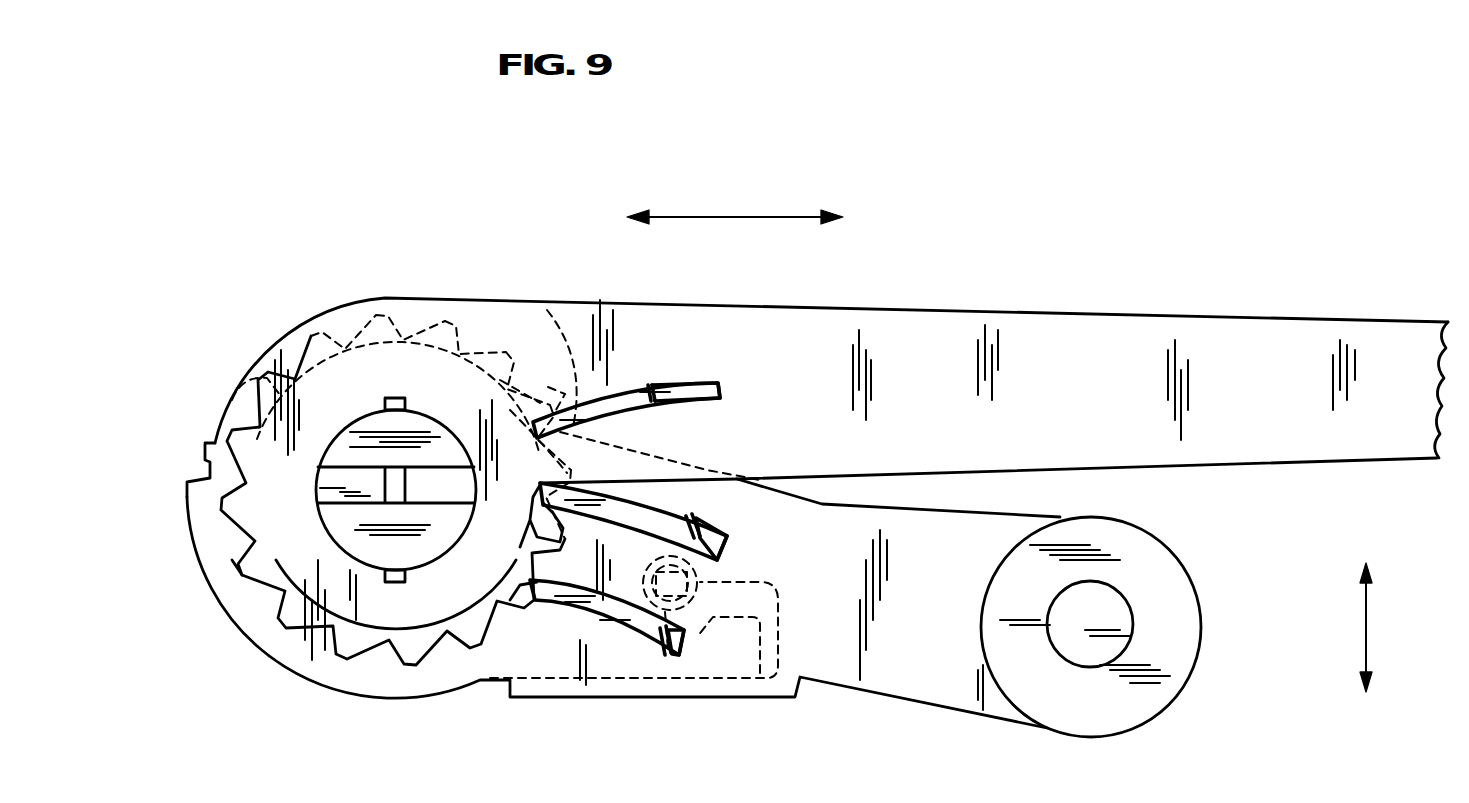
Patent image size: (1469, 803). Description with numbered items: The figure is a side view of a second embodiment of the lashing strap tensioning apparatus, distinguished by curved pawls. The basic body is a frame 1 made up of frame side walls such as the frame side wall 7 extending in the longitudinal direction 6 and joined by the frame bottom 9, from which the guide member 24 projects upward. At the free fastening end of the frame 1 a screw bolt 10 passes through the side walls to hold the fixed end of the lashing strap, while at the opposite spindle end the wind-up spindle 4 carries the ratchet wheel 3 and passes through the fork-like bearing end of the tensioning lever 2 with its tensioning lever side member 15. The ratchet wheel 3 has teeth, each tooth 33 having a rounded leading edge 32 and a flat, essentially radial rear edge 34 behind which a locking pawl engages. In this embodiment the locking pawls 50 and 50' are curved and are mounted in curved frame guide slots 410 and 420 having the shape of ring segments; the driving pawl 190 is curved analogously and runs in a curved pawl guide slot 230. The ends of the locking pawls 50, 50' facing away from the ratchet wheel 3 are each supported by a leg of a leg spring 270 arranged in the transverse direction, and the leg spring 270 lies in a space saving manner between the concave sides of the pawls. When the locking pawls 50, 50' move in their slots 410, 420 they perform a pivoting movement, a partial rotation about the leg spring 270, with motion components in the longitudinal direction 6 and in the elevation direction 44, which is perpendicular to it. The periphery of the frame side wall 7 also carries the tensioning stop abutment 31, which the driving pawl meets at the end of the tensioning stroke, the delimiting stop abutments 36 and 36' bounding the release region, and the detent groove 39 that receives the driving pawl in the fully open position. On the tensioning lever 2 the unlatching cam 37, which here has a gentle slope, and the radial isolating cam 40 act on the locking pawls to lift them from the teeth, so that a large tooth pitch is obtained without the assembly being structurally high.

The frame 1 is at (1133, 700).
The tensioning lever 2 is at (1110, 312).
The ratchet wheel 3 is at (522, 392).
The wind-up spindle 4 is at (420, 427).
The longitudinal direction 6 is at (718, 216).
The frame side wall 7 is at (952, 683).
The frame bottom 9 is at (790, 700).
The screw bolt 10 is at (1080, 653).
The tensioning lever side member 15 is at (1030, 330).
The guide member 24 is at (720, 597).
The tensioning stop abutment 31 is at (290, 325).
The leading edge 32 is at (487, 618).
The tooth 33 is at (485, 647).
The rear edge 34 is at (460, 640).
The delimiting stop abutment 36 is at (354, 490).
The delimiting stop abutment 36' is at (218, 344).
The unlatching cam 37 is at (237, 543).
The detent groove 39 is at (197, 473).
The radial isolating cam 40 is at (263, 408).
The elevation direction 44 is at (1360, 640).
The curved locking pawl 50 is at (607, 658).
The curved locking pawl 50' is at (643, 489).
The curved driving pawl 190 is at (640, 400).
The curved pawl guide slot 230 is at (720, 392).
The leg spring 270 is at (773, 580).
The curved frame guide slot 410 is at (717, 542).
The curved frame guide slot 420 is at (692, 653).